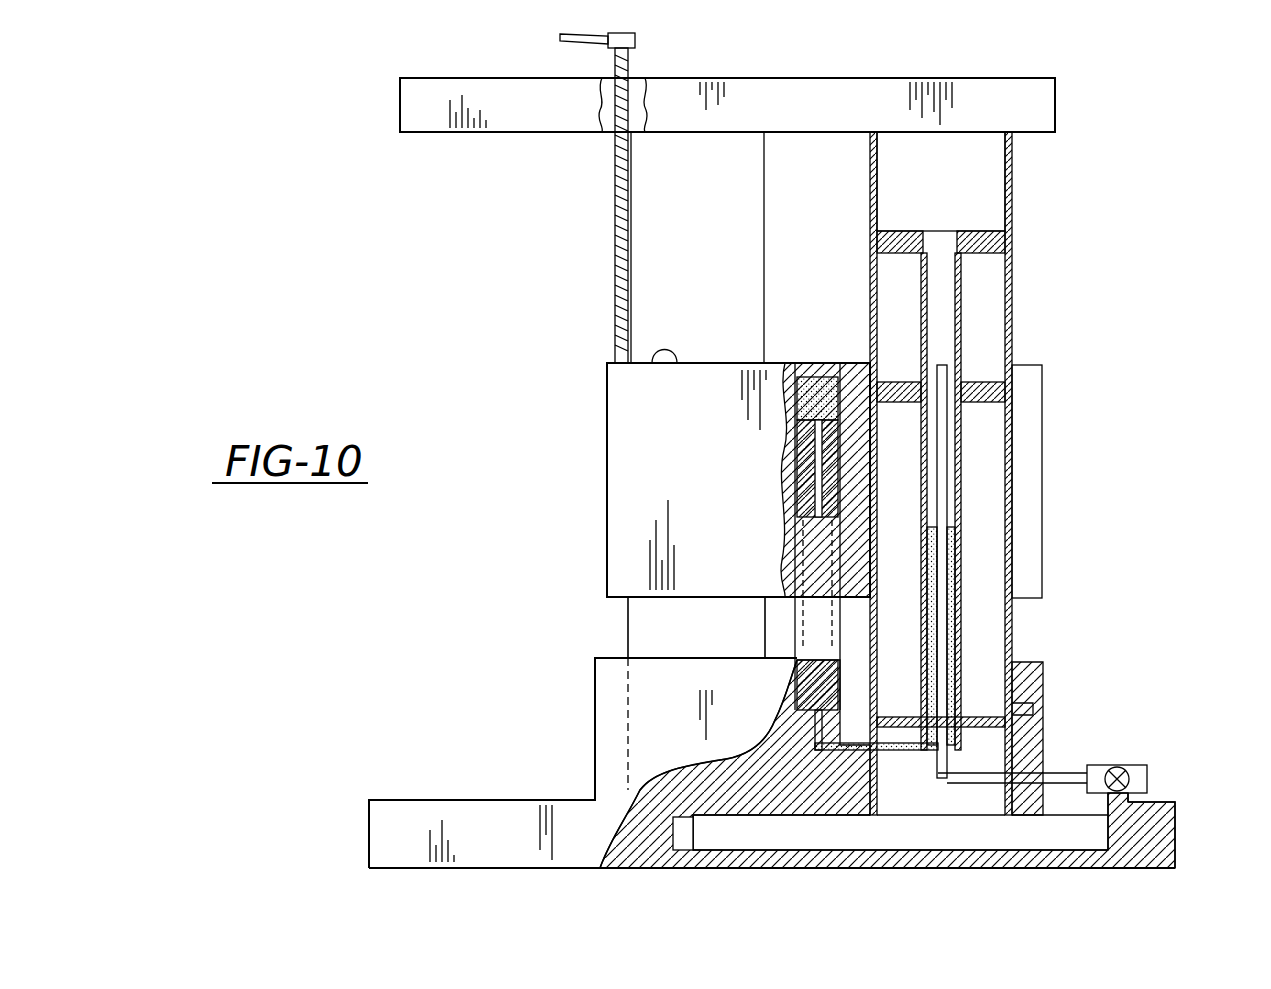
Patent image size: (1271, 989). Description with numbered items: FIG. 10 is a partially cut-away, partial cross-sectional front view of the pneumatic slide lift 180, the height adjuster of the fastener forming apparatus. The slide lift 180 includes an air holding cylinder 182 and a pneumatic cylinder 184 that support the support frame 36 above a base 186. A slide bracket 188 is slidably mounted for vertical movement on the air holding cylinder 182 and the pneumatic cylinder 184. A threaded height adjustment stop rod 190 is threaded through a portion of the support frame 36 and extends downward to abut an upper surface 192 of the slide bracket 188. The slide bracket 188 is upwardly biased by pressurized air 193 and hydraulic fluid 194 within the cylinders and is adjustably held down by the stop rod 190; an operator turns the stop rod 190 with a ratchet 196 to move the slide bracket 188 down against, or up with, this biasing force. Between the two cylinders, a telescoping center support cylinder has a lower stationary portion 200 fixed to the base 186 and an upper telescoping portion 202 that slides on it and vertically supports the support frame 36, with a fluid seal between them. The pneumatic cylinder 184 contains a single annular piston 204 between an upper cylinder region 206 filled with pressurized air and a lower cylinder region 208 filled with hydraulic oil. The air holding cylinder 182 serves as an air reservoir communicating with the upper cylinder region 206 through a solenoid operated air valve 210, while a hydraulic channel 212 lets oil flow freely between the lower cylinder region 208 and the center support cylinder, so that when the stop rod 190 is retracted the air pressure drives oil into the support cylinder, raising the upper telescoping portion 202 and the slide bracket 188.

The support frame 36 is at (888, 110).
The pneumatic slide lift 180 is at (1013, 328).
The air holding cylinder 182 is at (640, 617).
The pneumatic cylinder 184 is at (987, 547).
The base 186 is at (390, 832).
The slide bracket 188 is at (610, 492).
The threaded height adjustment stop rod 190 is at (612, 290).
The upper surface 192 is at (664, 360).
The pressurized air 193 is at (725, 795).
The hydraulic fluid 194 is at (798, 363).
The ratchet 196 is at (632, 40).
The lower stationary portion 200 is at (805, 630).
The upper telescoping portion 202 is at (815, 398).
The annular piston 204 is at (1010, 228).
The upper cylinder region 206 is at (965, 185).
The lower cylinder region 208 is at (970, 648).
The solenoid operated air valve 210 is at (1125, 768).
The hydraulic channel 212 is at (845, 850).